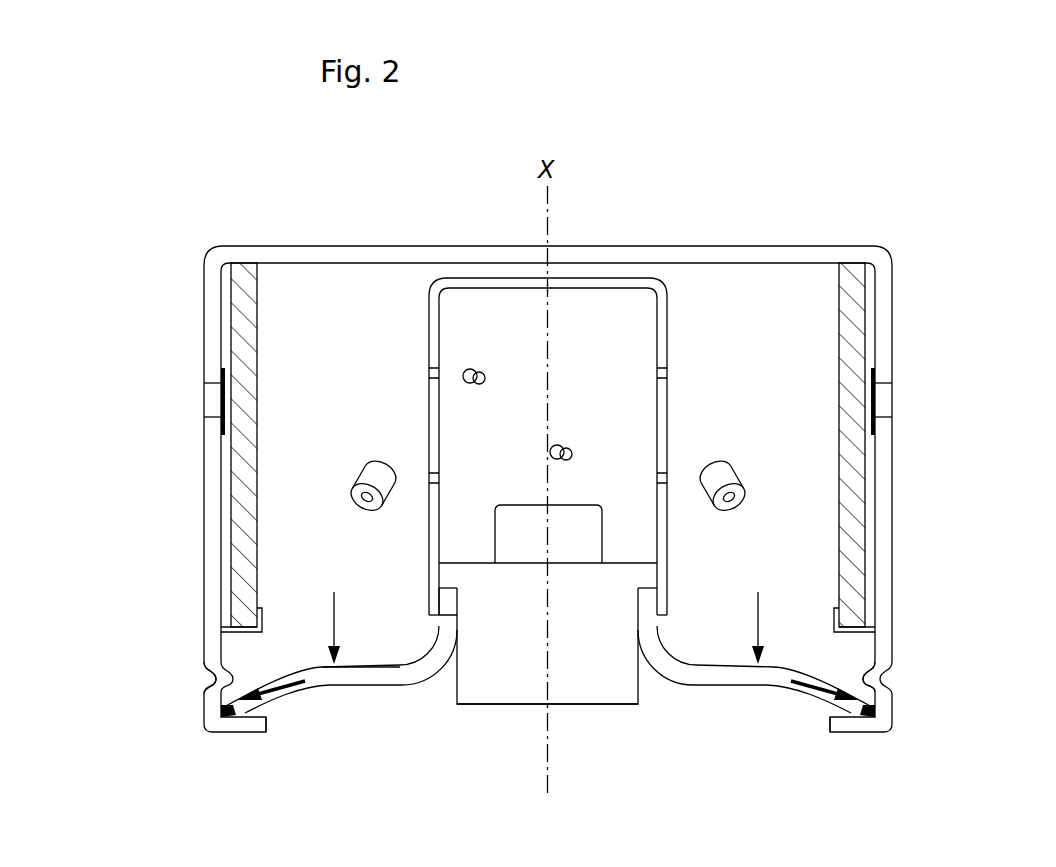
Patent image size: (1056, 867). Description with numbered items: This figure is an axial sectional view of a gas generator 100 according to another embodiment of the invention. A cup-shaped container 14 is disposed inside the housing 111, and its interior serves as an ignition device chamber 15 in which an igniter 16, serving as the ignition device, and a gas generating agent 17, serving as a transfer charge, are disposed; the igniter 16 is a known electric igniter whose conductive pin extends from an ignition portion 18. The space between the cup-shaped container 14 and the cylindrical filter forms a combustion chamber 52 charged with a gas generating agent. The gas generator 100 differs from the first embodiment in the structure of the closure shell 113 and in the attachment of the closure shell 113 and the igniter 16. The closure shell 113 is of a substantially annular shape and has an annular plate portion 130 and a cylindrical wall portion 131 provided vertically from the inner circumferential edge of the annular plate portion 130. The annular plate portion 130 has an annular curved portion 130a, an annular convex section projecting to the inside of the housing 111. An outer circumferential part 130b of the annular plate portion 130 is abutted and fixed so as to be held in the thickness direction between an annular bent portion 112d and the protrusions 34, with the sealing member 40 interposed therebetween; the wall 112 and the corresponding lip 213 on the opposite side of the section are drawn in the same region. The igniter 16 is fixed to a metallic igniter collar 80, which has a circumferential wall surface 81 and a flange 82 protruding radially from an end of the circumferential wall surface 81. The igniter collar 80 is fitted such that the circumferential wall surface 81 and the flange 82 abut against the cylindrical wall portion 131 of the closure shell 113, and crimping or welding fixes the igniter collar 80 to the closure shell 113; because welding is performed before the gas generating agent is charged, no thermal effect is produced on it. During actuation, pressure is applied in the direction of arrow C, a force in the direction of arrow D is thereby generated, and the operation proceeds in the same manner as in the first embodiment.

The gas generator 100 is at (670, 212).
The cup-shaped container 14 is at (668, 337).
The ignition device chamber 15 is at (618, 361).
The igniter 16 is at (572, 500).
The gas generating agent 17 is at (489, 376).
The ignition portion 18 is at (541, 558).
The combustion chamber 52 is at (356, 361).
The igniter collar 80 is at (525, 669).
The circumferential wall surface 81 is at (640, 683).
The flange 82 is at (663, 575).
The cylindrical wall portion 131 is at (452, 612).
The annular plate portion 130 is at (378, 689).
The annular curved portion 130a is at (318, 676).
The outer circumferential part 130b is at (217, 707).
The annular bent portion 112d is at (243, 722).
The protrusions 34 is at (204, 664).
The sealing member 40 is at (855, 702).
The sealing lip 213 is at (722, 686).
The housing wall 112 is at (885, 642).
The closure shell 113 is at (792, 698).
The housing 111 is at (996, 697).